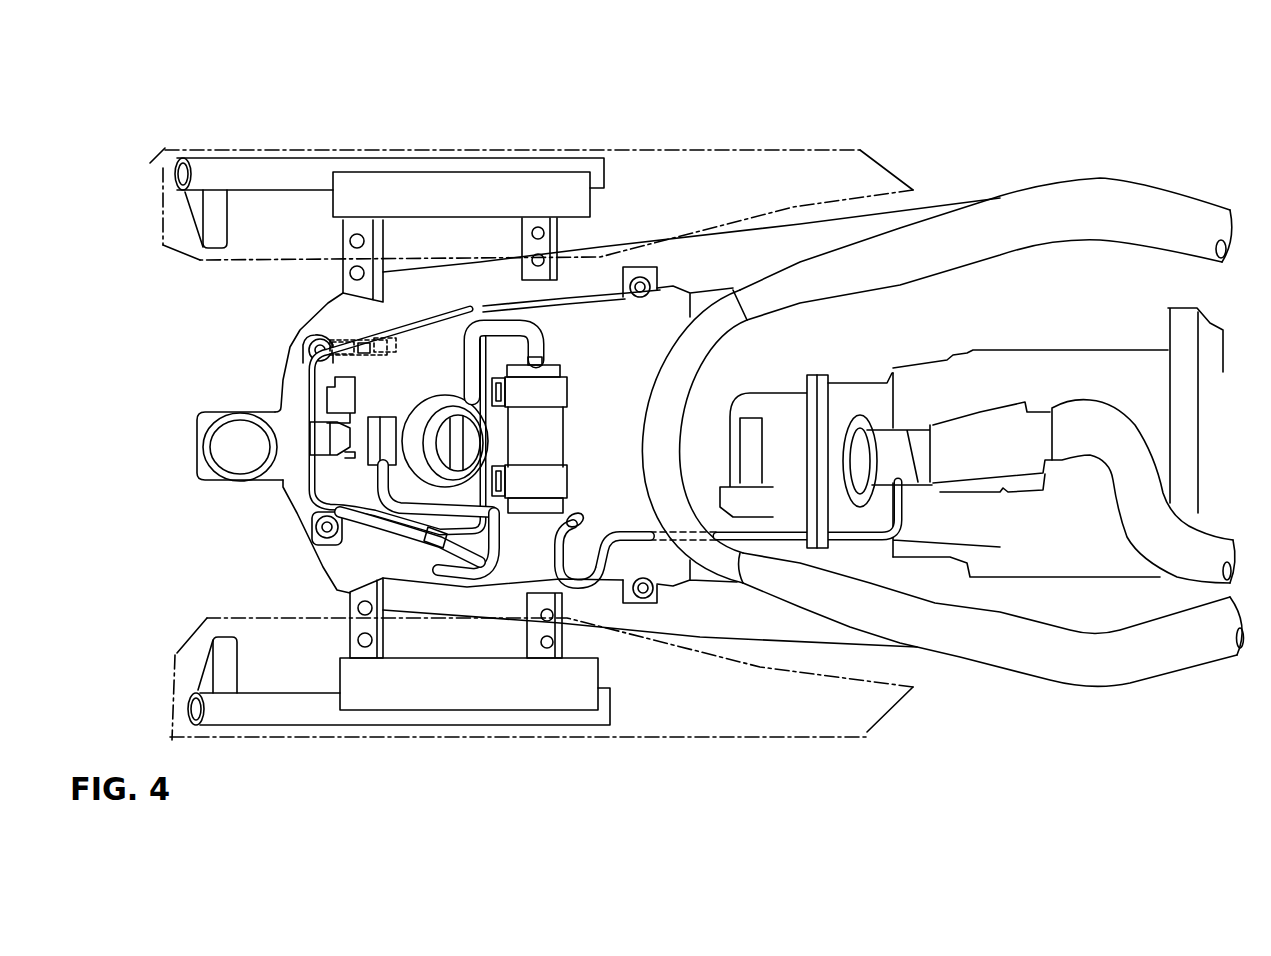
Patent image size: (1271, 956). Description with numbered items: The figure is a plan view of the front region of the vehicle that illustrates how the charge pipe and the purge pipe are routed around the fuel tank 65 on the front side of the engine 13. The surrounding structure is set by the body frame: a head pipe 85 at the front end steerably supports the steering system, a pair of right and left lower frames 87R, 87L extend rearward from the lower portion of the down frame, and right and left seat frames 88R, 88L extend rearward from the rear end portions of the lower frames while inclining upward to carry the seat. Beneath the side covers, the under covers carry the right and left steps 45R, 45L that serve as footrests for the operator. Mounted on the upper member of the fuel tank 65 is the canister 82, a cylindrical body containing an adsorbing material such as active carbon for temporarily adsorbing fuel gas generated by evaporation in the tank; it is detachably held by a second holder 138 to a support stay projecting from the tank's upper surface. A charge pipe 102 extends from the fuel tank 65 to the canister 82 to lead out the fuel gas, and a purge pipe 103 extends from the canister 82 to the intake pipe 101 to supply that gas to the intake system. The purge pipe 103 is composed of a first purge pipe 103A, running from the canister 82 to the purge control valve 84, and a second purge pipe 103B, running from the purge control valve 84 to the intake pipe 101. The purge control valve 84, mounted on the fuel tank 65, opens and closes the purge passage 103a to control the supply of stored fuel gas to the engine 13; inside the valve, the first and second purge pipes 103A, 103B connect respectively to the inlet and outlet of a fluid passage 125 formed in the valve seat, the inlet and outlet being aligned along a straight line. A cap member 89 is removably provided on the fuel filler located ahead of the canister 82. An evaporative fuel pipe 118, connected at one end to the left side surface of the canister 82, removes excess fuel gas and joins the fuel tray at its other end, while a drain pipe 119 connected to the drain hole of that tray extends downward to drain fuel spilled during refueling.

The engine 13 is at (1089, 313).
The right step 45R is at (583, 147).
The left step 45L is at (637, 737).
The fuel tank 65 is at (600, 340).
The canister 82 is at (548, 428).
The purge control valve 84 is at (313, 437).
The head pipe 85 is at (277, 473).
The right lower frame 87R is at (735, 263).
The left lower frame 87L is at (733, 615).
The right seat frame 88R is at (1013, 217).
The left seat frame 88L is at (1014, 652).
The cap member 89 is at (432, 397).
The intake pipe 101 is at (880, 447).
The charge pipe 102 is at (463, 340).
The purge pipe 103 is at (372, 96).
The first purge pipe 103A is at (343, 345).
The second purge pipe 103B is at (357, 345).
The purge passage 103a is at (386, 340).
The evaporative fuel pipe 118 is at (580, 562).
The drain pipe 119 is at (477, 580).
The fluid passage 125 is at (309, 405).
The second holder 138 is at (548, 390).